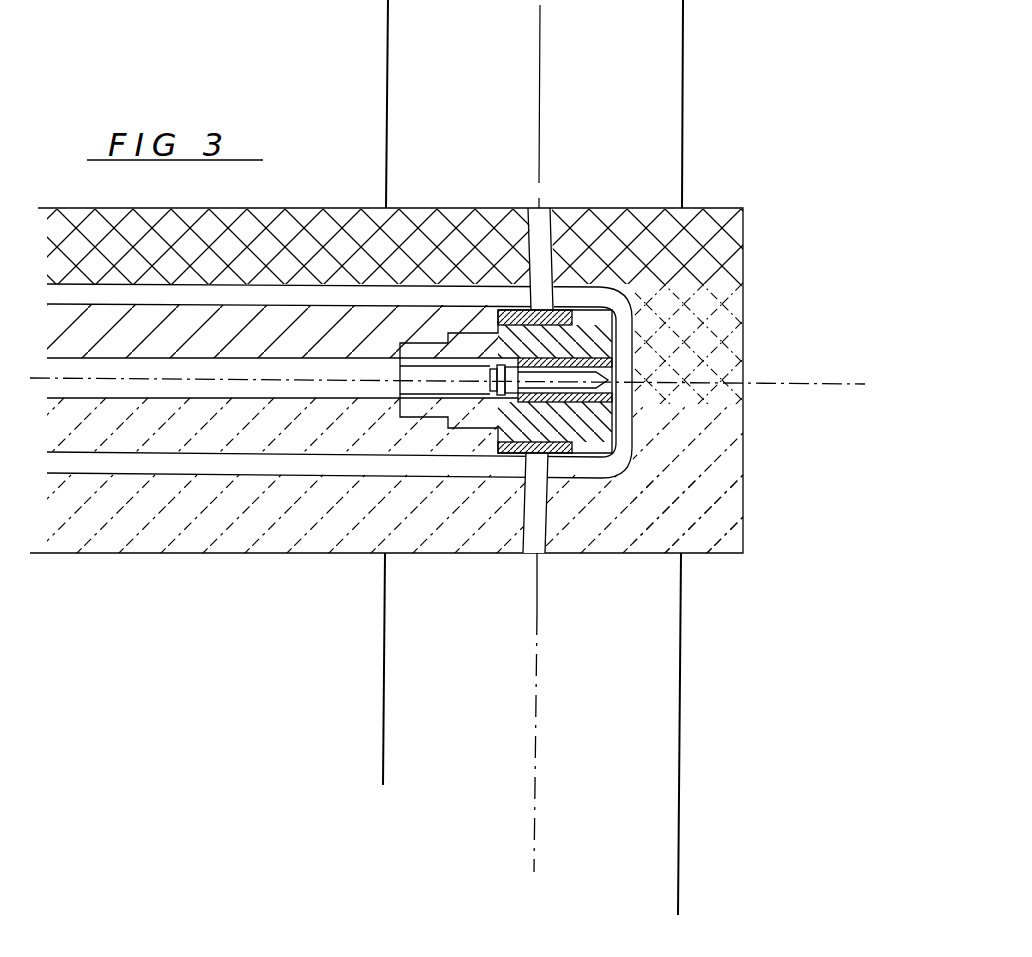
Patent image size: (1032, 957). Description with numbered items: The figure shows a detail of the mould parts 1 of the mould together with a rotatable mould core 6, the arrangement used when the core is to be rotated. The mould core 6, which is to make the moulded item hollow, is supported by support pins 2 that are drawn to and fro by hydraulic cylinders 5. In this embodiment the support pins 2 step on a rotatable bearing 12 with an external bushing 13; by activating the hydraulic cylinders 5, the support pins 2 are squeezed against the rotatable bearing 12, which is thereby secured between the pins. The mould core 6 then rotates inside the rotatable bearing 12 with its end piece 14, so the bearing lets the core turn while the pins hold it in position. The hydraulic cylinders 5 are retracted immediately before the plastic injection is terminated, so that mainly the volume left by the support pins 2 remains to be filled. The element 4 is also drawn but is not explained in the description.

The housing body 1 is at (655, 510).
The vertical tube 2 is at (528, 540).
The bolt 4 is at (582, 383).
The wall panel 5 is at (625, 732).
The insulating layer 6 is at (193, 433).
The conduit 12 is at (628, 460).
The seal 13 is at (510, 456).
The nut 14 is at (482, 417).